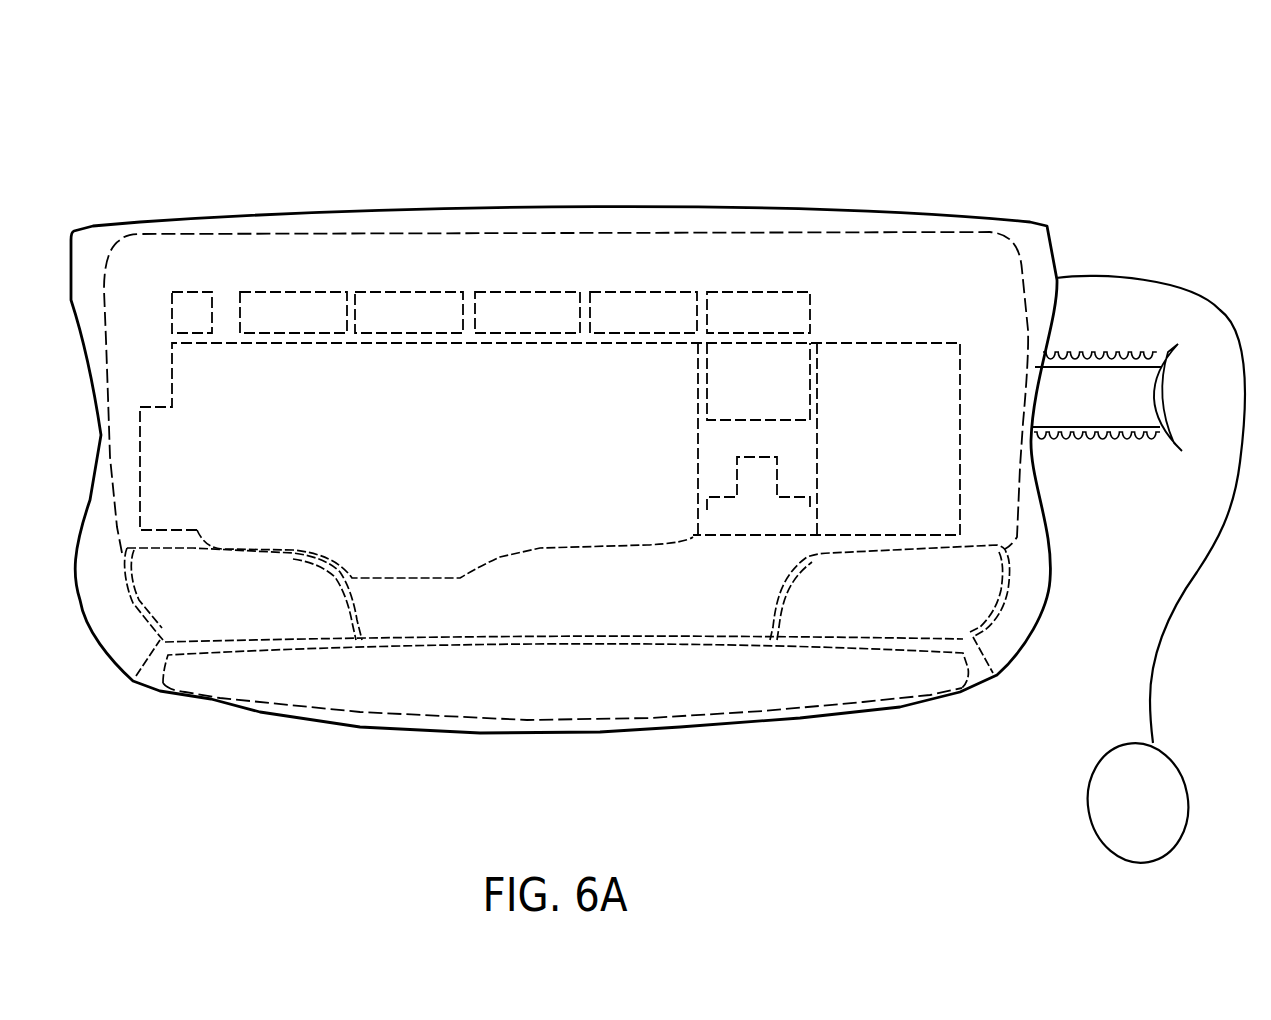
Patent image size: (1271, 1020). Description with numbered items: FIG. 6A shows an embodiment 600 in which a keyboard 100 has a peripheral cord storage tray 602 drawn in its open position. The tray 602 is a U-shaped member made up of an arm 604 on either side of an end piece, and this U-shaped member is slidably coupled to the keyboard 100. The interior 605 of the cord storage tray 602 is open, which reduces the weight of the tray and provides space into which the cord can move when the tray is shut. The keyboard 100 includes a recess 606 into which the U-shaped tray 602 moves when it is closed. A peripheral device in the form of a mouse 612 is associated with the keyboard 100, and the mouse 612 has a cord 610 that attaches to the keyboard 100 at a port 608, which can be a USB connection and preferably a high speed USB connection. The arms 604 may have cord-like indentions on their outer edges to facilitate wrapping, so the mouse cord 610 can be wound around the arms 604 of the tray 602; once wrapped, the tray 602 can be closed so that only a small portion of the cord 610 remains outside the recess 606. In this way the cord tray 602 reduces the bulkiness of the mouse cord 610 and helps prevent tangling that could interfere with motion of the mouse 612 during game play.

The keyboard 100 is at (562, 210).
The embodiment 600 is at (658, 452).
The peripheral cord storage tray 602 is at (1165, 403).
The arm 604 is at (1113, 350).
The interior 605 is at (1073, 407).
The recess 606 is at (1033, 412).
The port 608 is at (1059, 276).
The cord 610 is at (1160, 650).
The mouse 612 is at (1170, 797).